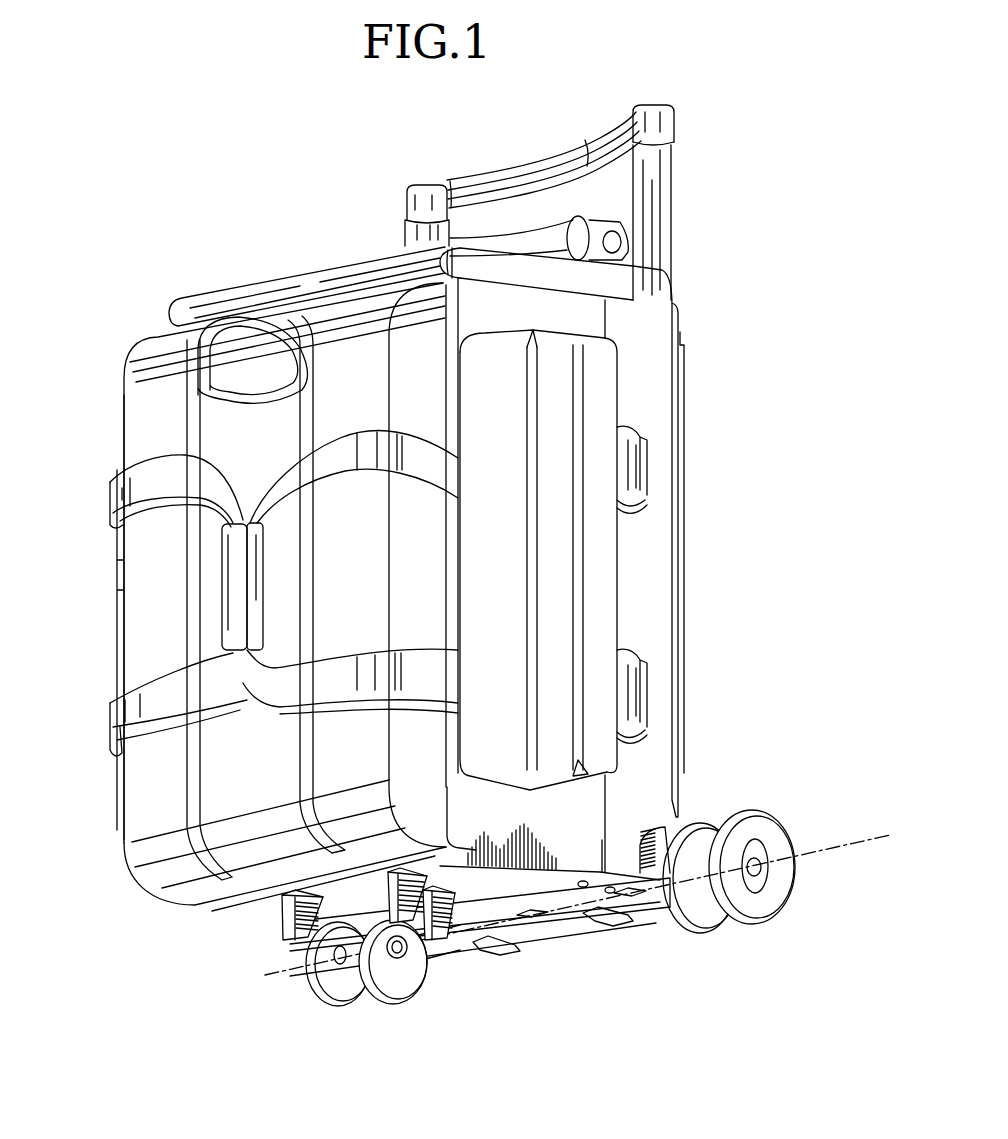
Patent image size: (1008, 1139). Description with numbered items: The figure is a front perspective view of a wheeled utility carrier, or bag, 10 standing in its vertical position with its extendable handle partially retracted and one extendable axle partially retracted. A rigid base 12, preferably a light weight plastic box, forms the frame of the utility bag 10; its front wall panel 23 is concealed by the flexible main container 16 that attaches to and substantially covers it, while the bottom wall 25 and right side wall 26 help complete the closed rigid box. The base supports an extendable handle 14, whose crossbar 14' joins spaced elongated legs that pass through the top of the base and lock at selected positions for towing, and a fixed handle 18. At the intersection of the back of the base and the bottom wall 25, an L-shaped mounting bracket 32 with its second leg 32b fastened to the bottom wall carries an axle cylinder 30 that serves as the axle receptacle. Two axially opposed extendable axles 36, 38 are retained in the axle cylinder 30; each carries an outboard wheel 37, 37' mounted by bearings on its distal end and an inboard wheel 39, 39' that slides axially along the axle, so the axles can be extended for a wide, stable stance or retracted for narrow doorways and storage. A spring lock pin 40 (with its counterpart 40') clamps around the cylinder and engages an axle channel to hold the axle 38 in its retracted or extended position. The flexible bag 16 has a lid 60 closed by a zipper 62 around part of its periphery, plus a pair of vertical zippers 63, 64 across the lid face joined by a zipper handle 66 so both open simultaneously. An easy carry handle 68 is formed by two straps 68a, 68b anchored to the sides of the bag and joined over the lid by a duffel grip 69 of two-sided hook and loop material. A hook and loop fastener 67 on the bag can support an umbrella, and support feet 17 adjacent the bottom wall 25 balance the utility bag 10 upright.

The wheeled utility carrier 10 is at (145, 238).
The rigid base 12 is at (645, 596).
The extendable handle 14 is at (586, 202).
The crossbar 14' is at (544, 132).
The main container 16 is at (567, 315).
The support feet 17 is at (290, 928).
The fixed handle 18 is at (530, 240).
The front wall panel 23 is at (620, 794).
The bottom wall 25 is at (622, 870).
The right side wall 26 is at (655, 723).
The axle cylinder 30 is at (655, 912).
The mounting bracket 32 is at (560, 898).
The second leg 32b is at (462, 918).
The extendable axle 36 is at (308, 958).
The outboard wheel 37 is at (762, 889).
The outboard wheel 37' is at (383, 1002).
The extendable axle 38 is at (760, 870).
The inboard wheel 39 is at (713, 905).
The inboard wheel 39' is at (364, 1000).
The spring lock pin 40 is at (606, 957).
The foot clip 40' is at (498, 979).
The lid 60 is at (126, 398).
The zipper 62 is at (447, 293).
The vertical zipper 63 is at (188, 402).
The vertical zipper 64 is at (314, 380).
The zipper handle 66 is at (248, 402).
The hook and loop fastener 67 is at (630, 452).
The easy carry handle 68 is at (128, 493).
The strap 68a is at (337, 673).
The strap 68b is at (113, 727).
The duffel grip 69 is at (227, 585).